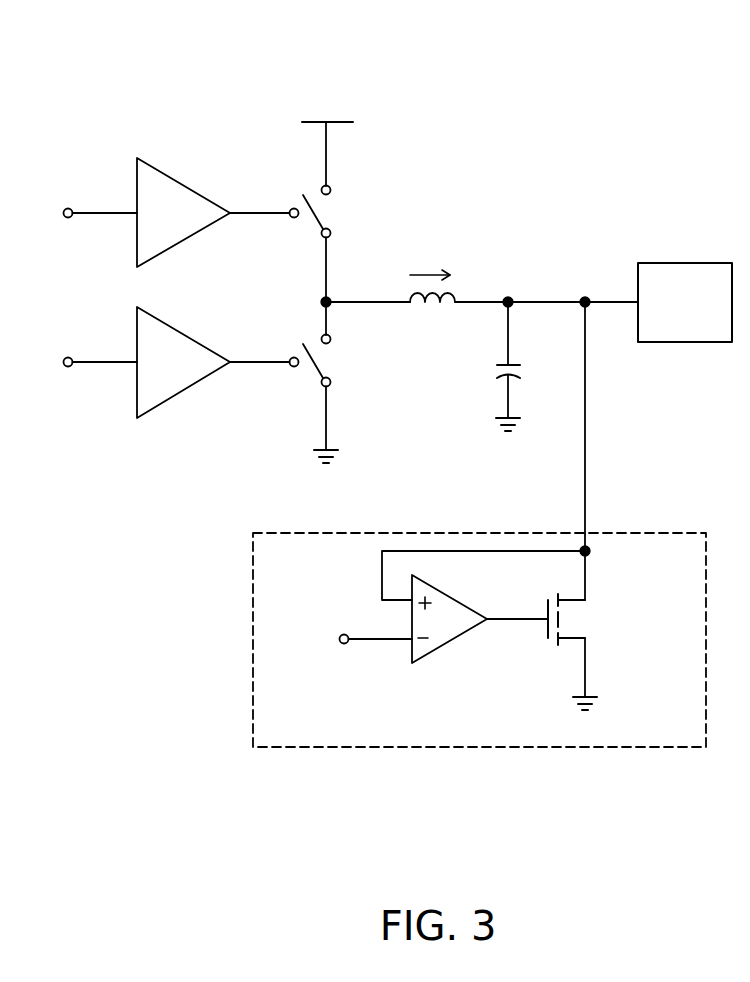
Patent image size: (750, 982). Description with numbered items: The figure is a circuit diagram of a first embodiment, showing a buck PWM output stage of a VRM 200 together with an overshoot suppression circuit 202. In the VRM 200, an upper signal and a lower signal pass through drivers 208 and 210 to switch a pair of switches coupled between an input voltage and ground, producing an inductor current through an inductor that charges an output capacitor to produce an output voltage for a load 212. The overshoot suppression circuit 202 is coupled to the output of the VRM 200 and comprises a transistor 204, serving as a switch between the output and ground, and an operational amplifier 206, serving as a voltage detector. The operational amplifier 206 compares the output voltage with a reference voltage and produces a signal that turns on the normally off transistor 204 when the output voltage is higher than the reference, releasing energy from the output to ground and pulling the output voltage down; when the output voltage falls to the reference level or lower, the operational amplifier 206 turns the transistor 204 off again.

The VRM 200 is at (628, 97).
The overshoot suppression circuit 202 is at (252, 640).
The transistor 204 is at (600, 614).
The operational amplifier 206 is at (449, 641).
The driver 208 is at (183, 182).
The driver 210 is at (183, 330).
The load 212 is at (683, 263).